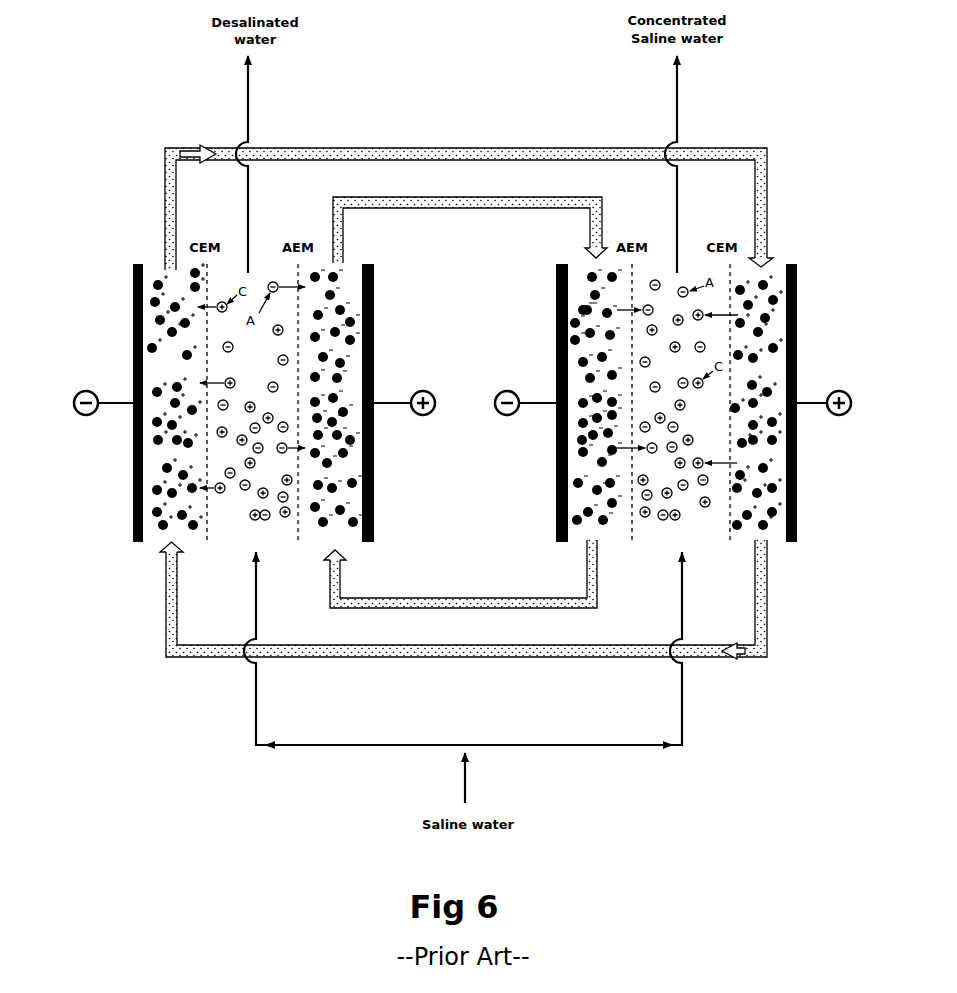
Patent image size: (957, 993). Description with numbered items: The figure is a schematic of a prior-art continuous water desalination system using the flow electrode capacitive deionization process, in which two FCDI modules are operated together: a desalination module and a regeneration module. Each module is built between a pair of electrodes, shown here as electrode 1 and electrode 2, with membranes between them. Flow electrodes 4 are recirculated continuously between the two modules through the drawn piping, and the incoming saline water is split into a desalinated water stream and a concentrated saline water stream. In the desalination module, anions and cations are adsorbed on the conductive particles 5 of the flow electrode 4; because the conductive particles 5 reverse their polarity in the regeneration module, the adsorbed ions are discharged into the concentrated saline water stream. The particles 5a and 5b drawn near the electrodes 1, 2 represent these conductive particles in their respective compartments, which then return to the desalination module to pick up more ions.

The first electrode (anode) 1 is at (366, 263).
The second electrode (cathode) 2 is at (135, 262).
The flow electrode 4 is at (757, 210).
The conductive particles 5 is at (339, 488).
The cation-carrying particle 5a is at (184, 354).
The anion-carrying particle 5b is at (356, 322).